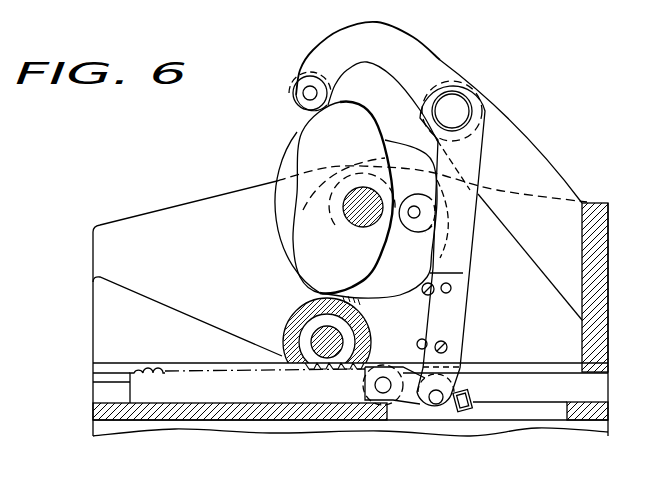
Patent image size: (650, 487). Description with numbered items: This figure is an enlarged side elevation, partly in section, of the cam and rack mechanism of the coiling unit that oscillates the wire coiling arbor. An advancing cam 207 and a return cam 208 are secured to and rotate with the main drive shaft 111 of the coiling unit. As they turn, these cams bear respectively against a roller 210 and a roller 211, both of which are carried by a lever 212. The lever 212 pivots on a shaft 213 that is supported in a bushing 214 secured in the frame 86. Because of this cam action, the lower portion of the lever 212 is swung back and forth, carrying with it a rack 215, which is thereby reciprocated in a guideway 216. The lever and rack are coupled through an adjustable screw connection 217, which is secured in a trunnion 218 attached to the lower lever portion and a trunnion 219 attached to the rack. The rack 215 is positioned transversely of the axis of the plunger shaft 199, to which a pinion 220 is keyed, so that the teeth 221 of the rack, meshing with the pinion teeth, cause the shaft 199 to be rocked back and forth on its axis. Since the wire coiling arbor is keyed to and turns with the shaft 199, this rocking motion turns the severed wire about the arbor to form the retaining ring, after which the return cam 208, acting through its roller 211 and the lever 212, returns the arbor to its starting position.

The frame 86 is at (580, 174).
The main drive shaft 111 is at (347, 219).
The plunger shaft 199 is at (312, 334).
The advancing cam 207 is at (300, 263).
The return cam 208 is at (302, 130).
The roller 210 is at (447, 224).
The roller 211 is at (292, 92).
The lever 212 is at (440, 64).
The shaft 213 is at (458, 113).
The bushing 214 is at (470, 90).
The rack 215 is at (230, 398).
The guideway 216 is at (106, 391).
The adjustable screw connection 217 is at (475, 397).
The trunnion 218 is at (386, 396).
The trunnion 219 is at (437, 404).
The pinion 220 is at (352, 343).
The teeth 221 is at (146, 362).